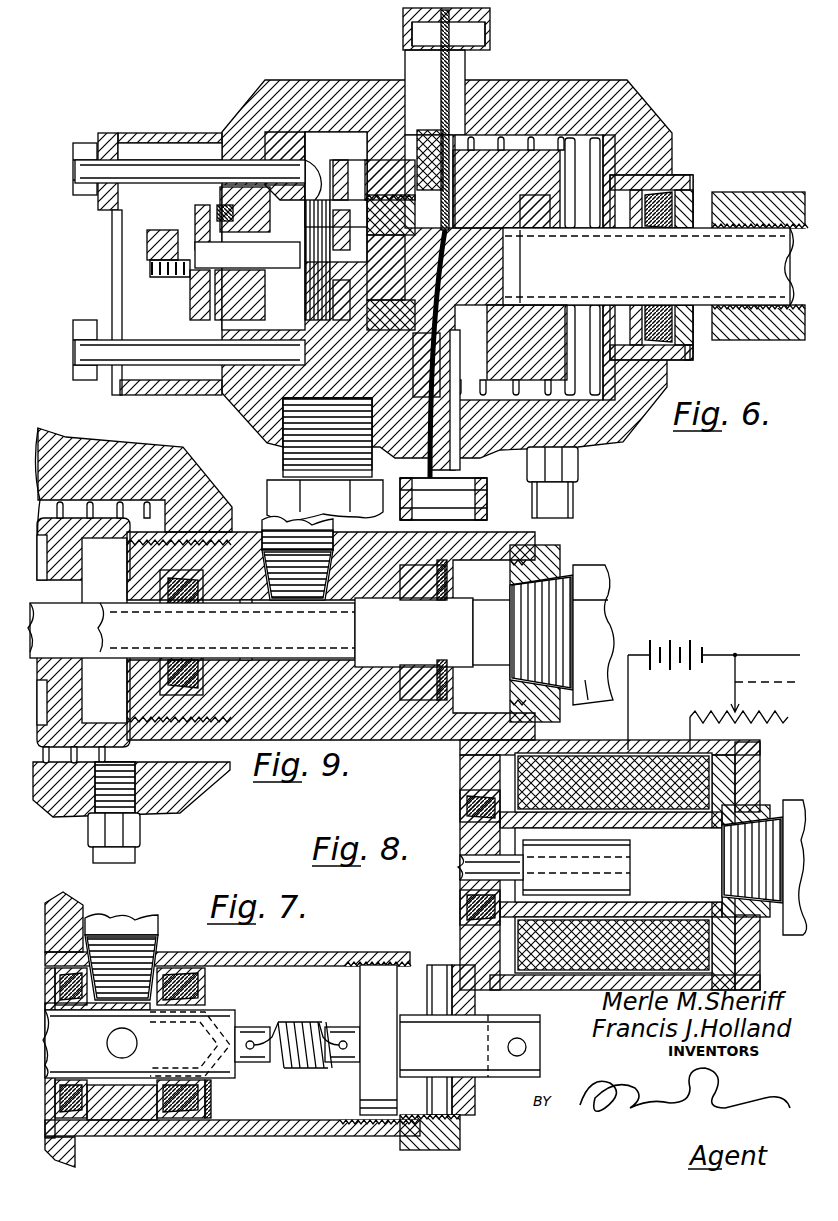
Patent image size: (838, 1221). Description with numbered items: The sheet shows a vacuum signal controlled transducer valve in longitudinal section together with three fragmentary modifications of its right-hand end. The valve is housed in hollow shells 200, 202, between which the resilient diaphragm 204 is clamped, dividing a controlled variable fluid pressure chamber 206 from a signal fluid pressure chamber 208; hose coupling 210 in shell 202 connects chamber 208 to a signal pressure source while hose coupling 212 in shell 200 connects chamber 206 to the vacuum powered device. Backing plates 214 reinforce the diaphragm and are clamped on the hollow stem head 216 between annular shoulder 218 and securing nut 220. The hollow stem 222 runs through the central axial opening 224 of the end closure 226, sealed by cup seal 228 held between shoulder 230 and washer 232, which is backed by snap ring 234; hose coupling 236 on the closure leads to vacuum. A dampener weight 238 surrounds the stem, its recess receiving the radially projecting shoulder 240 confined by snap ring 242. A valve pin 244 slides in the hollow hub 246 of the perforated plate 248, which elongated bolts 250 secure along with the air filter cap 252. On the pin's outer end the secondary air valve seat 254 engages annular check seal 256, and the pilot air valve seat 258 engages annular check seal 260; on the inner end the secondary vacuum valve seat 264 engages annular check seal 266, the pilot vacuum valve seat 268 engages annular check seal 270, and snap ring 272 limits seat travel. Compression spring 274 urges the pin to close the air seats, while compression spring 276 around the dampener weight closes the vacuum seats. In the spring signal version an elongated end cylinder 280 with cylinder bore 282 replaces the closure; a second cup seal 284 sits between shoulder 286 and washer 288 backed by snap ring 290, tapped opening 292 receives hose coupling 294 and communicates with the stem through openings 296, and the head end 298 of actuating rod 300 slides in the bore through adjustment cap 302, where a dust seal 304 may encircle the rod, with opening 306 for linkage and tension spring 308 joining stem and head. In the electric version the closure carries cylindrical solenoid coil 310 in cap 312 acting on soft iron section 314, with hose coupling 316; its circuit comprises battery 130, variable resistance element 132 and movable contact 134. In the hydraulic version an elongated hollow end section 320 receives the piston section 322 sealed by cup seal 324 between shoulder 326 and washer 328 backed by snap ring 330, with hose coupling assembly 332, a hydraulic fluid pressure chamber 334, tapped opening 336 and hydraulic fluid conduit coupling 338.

In FIG. 8, the battery 130 is at (703, 645).
In FIG. 8, the variable resistance element 132 is at (748, 715).
In FIG. 8, the movable contact 134 is at (730, 703).
In FIG. 6, the hollow shell 200 is at (398, 72).
In FIG. 6, the hollow shell 202 is at (495, 72).
In FIG. 9, the hollow shell 202 is at (50, 440).
In FIG. 7, the hollow shell 202 is at (60, 905).
In FIG. 6, the resilient diaphragm 204 is at (449, 244).
In FIG. 6, the controlled variable fluid pressure chamber 206 is at (347, 143).
In FIG. 6, the signal fluid pressure chamber 208 is at (602, 147).
In FIG. 9, the signal fluid pressure chamber 208 is at (175, 510).
In FIG. 6, the hose coupling 210 is at (575, 497).
In FIG. 9, the hose coupling 210 is at (145, 845).
In FIG. 6, the hose coupling 212 is at (283, 476).
In FIG. 6, the backing plates 214 is at (420, 145).
In FIG. 6, the hollow stem head 216 is at (470, 228).
In FIG. 6, the annular shoulder 218 is at (447, 305).
In FIG. 6, the securing nut 220 is at (397, 360).
In FIG. 6, the hollow stem 222 is at (720, 246).
In FIG. 9, the hollow stem 222 is at (110, 643).
In FIG. 8, the hollow stem 222 is at (488, 882).
In FIG. 7, the hollow stem 222 is at (230, 1013).
In FIG. 6, the central axial opening 224 is at (758, 325).
In FIG. 6, the end closure 226 is at (678, 360).
In FIG. 8, the end closure 226 is at (470, 783).
In FIG. 6, the cup seal 228 is at (673, 197).
In FIG. 9, the cup seal 228 is at (175, 610).
In FIG. 8, the cup seal 228 is at (470, 915).
In FIG. 7, the cup seal 228 is at (75, 1012).
In FIG. 6, the shoulder 230 is at (685, 228).
In FIG. 6, the washer 232 is at (632, 305).
In FIG. 6, the snap ring 234 is at (640, 228).
In FIG. 6, the hose coupling 236 is at (790, 192).
In FIG. 6, the dampener weight 238 is at (527, 207).
In FIG. 9, the dampener weight 238 is at (100, 520).
In FIG. 6, the radially projecting shoulder 240 is at (472, 400).
In FIG. 6, the snap ring 242 is at (439, 377).
In FIG. 6, the valve pin 244 is at (255, 270).
In FIG. 6, the hollow hub 246 is at (255, 230).
In FIG. 6, the perforated plate 248 is at (297, 120).
In FIG. 6, the elongated bolts 250 is at (68, 173).
In FIG. 6, the air filter cap 252 is at (160, 132).
In FIG. 6, the secondary air valve seat 254 is at (195, 215).
In FIG. 6, the annular check seal 256 is at (240, 304).
In FIG. 6, the pilot air valve seat 258 is at (150, 262).
In FIG. 6, the annular check seal 260 is at (200, 318).
In FIG. 6, the secondary vacuum valve seat 264 is at (313, 173).
In FIG. 6, the annular check seal 266 is at (385, 228).
In FIG. 6, the pilot vacuum valve seat 268 is at (335, 235).
In FIG. 6, the annular check seal 270 is at (335, 300).
In FIG. 6, the snap ring 272 is at (390, 262).
In FIG. 6, the compression spring 274 is at (310, 258).
In FIG. 6, the compression spring 276 is at (590, 228).
In FIG. 9, the compression spring 276 is at (150, 530).
In FIG. 7, the elongated end cylinder 280 is at (265, 1137).
In FIG. 7, the cylinder bore 282 is at (297, 1108).
In FIG. 7, the second cup seal 284 is at (175, 1010).
In FIG. 7, the shoulder 286 is at (172, 1083).
In FIG. 7, the washer 288 is at (210, 1093).
In FIG. 7, the snap ring 290 is at (208, 970).
In FIG. 7, the tapped opening 292 is at (130, 990).
In FIG. 7, the hose coupling 294 is at (140, 918).
In FIG. 7, the openings 296 is at (110, 1042).
In FIG. 7, the head end 298 is at (373, 1004).
In FIG. 7, the actuating rod 300 is at (468, 1057).
In FIG. 7, the adjustment cap 302 is at (440, 1150).
In FIG. 7, the sleeve 304 is at (468, 1090).
In FIG. 7, the opening 306 is at (527, 1047).
In FIG. 7, the tension spring 308 is at (300, 1068).
In FIG. 8, the cylindrical solenoid coil 310 is at (672, 900).
In FIG. 8, the cap 312 is at (722, 805).
In FIG. 8, the soft iron section 314 is at (632, 850).
In FIG. 8, the hose coupling 316 is at (795, 930).
In FIG. 9, the elongated hollow end section 320 is at (535, 540).
In FIG. 9, the piston section 322 is at (455, 608).
In FIG. 9, the cup seal 324 is at (414, 632).
In FIG. 9, the shoulder 326 is at (407, 667).
In FIG. 9, the washer 328 is at (447, 678).
In FIG. 9, the snap ring 330 is at (445, 700).
In FIG. 9, the hose coupling assembly 332 is at (603, 568).
In FIG. 9, the hydraulic fluid pressure chamber 334 is at (313, 660).
In FIG. 9, the tapped opening 336 is at (303, 597).
In FIG. 9, the hydraulic fluid conduit coupling 338 is at (262, 515).